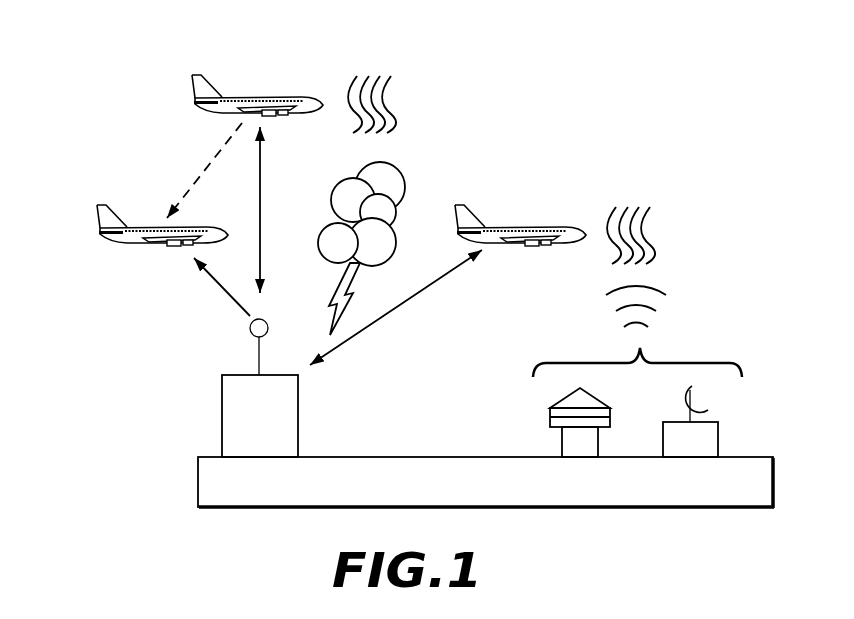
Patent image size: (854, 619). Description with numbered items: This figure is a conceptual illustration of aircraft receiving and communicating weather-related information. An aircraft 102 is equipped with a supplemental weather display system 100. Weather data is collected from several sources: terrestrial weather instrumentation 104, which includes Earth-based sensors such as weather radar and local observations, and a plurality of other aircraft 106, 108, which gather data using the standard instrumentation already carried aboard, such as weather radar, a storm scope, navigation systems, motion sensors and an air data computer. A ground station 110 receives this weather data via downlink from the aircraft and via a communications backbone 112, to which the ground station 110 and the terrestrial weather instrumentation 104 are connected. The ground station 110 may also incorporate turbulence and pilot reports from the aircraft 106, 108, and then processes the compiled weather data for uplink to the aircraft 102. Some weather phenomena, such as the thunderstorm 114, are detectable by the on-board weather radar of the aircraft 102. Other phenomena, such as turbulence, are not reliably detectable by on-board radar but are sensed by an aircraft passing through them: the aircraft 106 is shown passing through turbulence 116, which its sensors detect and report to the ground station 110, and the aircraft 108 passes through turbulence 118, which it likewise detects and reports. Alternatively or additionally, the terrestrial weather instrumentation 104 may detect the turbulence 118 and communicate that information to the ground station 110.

The supplemental weather display system 100 is at (134, 281).
The aircraft 102 is at (195, 228).
The terrestrial weather instrumentation 104 is at (528, 394).
The aircraft 106 is at (288, 98).
The aircraft 108 is at (558, 228).
The ground station 110 is at (298, 415).
The communications backbone 112 is at (462, 456).
The thunderstorm 114 is at (415, 180).
The turbulence 116 is at (398, 60).
The turbulence 118 is at (664, 186).